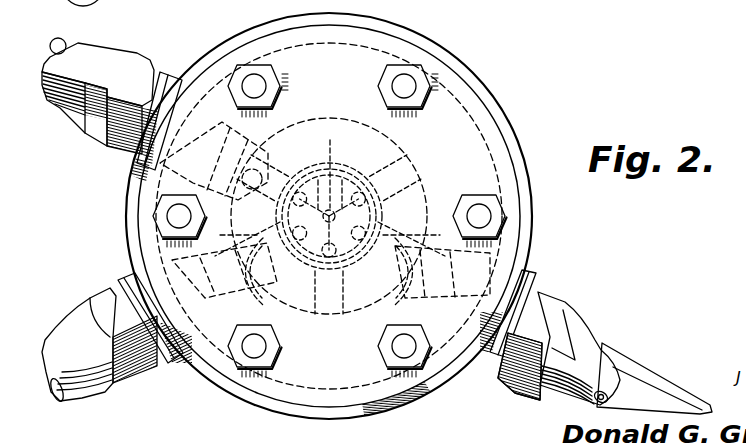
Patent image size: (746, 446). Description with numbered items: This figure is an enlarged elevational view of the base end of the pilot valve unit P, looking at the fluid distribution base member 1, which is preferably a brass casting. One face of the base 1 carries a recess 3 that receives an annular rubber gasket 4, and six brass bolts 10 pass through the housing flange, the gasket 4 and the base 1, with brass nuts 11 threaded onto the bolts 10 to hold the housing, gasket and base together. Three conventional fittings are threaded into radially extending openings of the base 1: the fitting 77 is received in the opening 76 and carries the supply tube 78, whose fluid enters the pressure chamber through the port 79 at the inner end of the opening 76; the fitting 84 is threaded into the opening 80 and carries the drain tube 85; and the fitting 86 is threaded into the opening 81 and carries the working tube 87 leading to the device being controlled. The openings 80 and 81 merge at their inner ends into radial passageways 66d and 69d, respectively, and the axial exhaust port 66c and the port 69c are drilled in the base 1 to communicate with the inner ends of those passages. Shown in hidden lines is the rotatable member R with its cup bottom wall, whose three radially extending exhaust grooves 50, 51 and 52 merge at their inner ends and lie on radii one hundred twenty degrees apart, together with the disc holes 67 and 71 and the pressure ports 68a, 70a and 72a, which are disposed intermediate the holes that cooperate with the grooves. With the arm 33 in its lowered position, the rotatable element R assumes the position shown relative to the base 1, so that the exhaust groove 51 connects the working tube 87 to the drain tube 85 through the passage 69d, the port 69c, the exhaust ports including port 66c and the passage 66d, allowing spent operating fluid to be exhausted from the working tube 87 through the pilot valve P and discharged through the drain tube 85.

The fluid distribution base member 1 is at (344, 23).
The pilot valve unit P is at (472, 74).
The recess 3 is at (333, 216).
The annular rubber gasket 4 is at (385, 135).
The brass bolts 10 is at (327, 216).
The brass nuts 11 is at (325, 225).
The arm 33 is at (666, 374).
The exhaust groove 50 is at (335, 172).
The exhaust groove 51 is at (348, 252).
The exhaust groove 52 is at (300, 270).
The axial exhaust port 66c is at (322, 192).
The radial passageway 66d is at (296, 250).
The hole 67 is at (349, 172).
The pressure port 68a is at (372, 189).
The port 69c is at (378, 228).
The radial passageway 69d is at (387, 290).
The pressure port 70a is at (326, 276).
The hole 71 is at (284, 236).
The pressure port 72a is at (289, 209).
The radially extending opening 76 is at (205, 92).
The fitting 77 is at (138, 160).
The supply tube 78 is at (78, 41).
The port 79 is at (266, 162).
The radially extending opening 80 is at (200, 352).
The radially extending opening 81 is at (478, 282).
The fitting 84 is at (127, 278).
The drain tube 85 is at (65, 404).
The fitting 86 is at (533, 282).
The working tube 87 is at (612, 356).
The rotatable member R is at (383, 213).